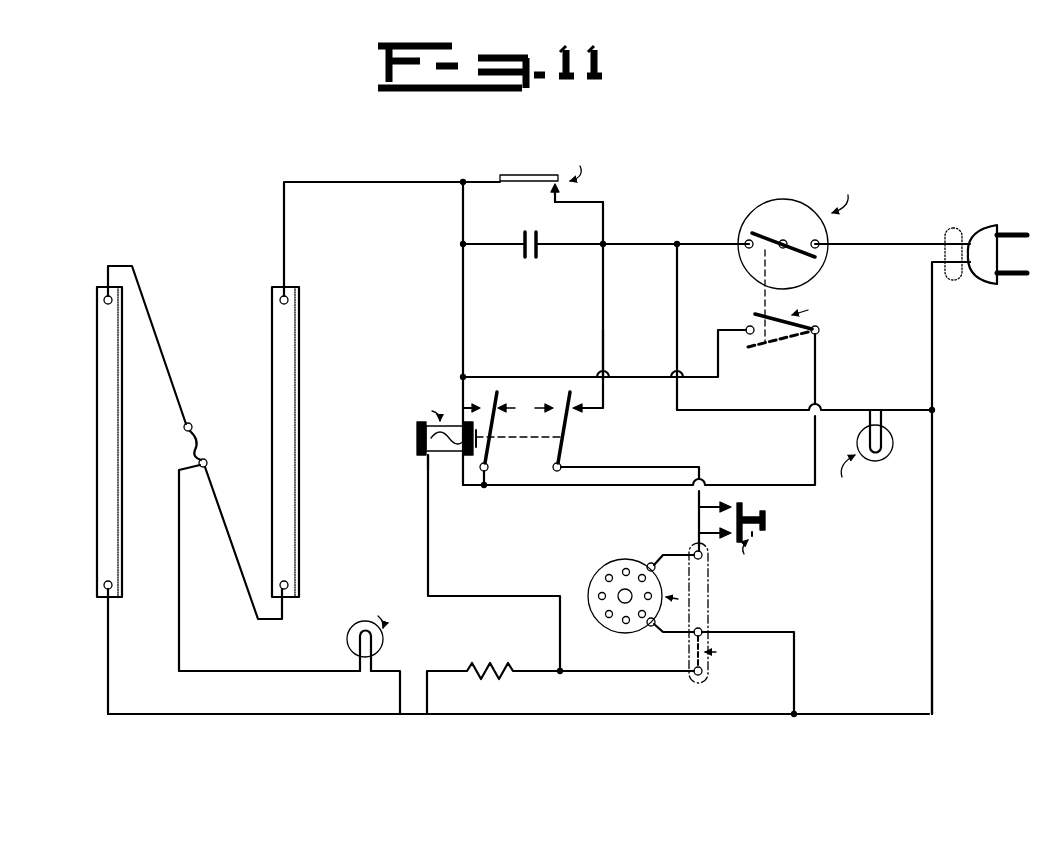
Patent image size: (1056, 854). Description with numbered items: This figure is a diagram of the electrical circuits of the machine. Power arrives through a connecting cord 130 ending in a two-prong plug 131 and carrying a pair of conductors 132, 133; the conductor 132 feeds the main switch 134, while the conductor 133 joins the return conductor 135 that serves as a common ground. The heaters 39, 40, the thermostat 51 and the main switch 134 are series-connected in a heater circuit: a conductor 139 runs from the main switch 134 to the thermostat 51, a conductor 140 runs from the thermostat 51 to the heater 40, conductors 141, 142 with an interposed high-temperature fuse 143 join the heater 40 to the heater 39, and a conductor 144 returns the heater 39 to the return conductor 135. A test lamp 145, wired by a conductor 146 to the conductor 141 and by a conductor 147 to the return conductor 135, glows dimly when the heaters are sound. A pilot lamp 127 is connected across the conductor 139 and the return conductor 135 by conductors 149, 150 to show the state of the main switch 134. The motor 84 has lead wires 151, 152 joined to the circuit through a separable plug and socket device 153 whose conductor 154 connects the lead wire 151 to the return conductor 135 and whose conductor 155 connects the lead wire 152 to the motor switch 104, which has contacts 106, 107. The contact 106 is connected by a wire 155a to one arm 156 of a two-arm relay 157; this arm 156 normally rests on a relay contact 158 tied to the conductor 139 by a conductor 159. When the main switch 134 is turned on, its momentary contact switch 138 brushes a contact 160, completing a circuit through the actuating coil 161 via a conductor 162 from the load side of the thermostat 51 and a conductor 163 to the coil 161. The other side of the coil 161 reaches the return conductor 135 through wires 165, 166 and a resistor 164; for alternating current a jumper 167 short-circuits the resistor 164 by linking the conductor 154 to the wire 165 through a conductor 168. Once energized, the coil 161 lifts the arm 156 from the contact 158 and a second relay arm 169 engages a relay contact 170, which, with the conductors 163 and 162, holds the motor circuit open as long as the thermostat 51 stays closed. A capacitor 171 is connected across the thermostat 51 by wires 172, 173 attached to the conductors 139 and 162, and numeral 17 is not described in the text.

The heater 39 is at (96, 354).
The heater 40 is at (272, 351).
The thermostat 51 is at (548, 183).
The motor switch 17 is at (767, 520).
The motor 84 is at (600, 566).
The motor switch 104 is at (755, 534).
The contact of motor switch 106 is at (712, 503).
The contact of motor switch 107 is at (712, 529).
The pilot lamp 127 is at (893, 445).
The connecting cord 130 is at (948, 227).
The two-prong plug 131 is at (988, 230).
The conductor 132 is at (920, 243).
The conductor 133 is at (932, 363).
The main switch 134 is at (828, 226).
The return conductor 135 is at (929, 688).
The momentary contact switch 138 is at (750, 308).
The conductor 139 is at (605, 228).
The conductor 140 is at (397, 178).
The conductor 141 is at (215, 482).
The conductor 142 is at (156, 320).
The high-temperature fuse 143 is at (196, 432).
The conductor 144 is at (108, 658).
The test lamp 145 is at (347, 642).
The conductor 146 is at (179, 655).
The conductor 147 is at (400, 696).
The conductor 149 is at (677, 298).
The conductor 150 is at (903, 409).
The motor lead wire 151 is at (650, 627).
The motor lead wire 152 is at (655, 558).
The plug and socket device 153 is at (712, 621).
The conductor 154 is at (794, 666).
The conductor 155 is at (690, 547).
The wire 155a is at (630, 466).
The relay arm 156 is at (563, 448).
The two-arm relay 157 is at (415, 438).
The relay contact 158 is at (574, 414).
The conductor 159 is at (605, 349).
The contact 160 is at (746, 326).
The actuating coil 161 is at (430, 456).
The conductor 162 is at (464, 354).
The conductor 163 is at (815, 454).
The resistor 164 is at (494, 678).
The wire 165 is at (430, 555).
The wire 166 is at (440, 666).
The jumper 167 is at (692, 663).
The conductor 168 is at (600, 678).
The second relay arm 169 is at (490, 453).
The relay contact 170 is at (482, 400).
The capacitor 171 is at (530, 230).
The wire 172 is at (563, 247).
The wire 173 is at (503, 247).